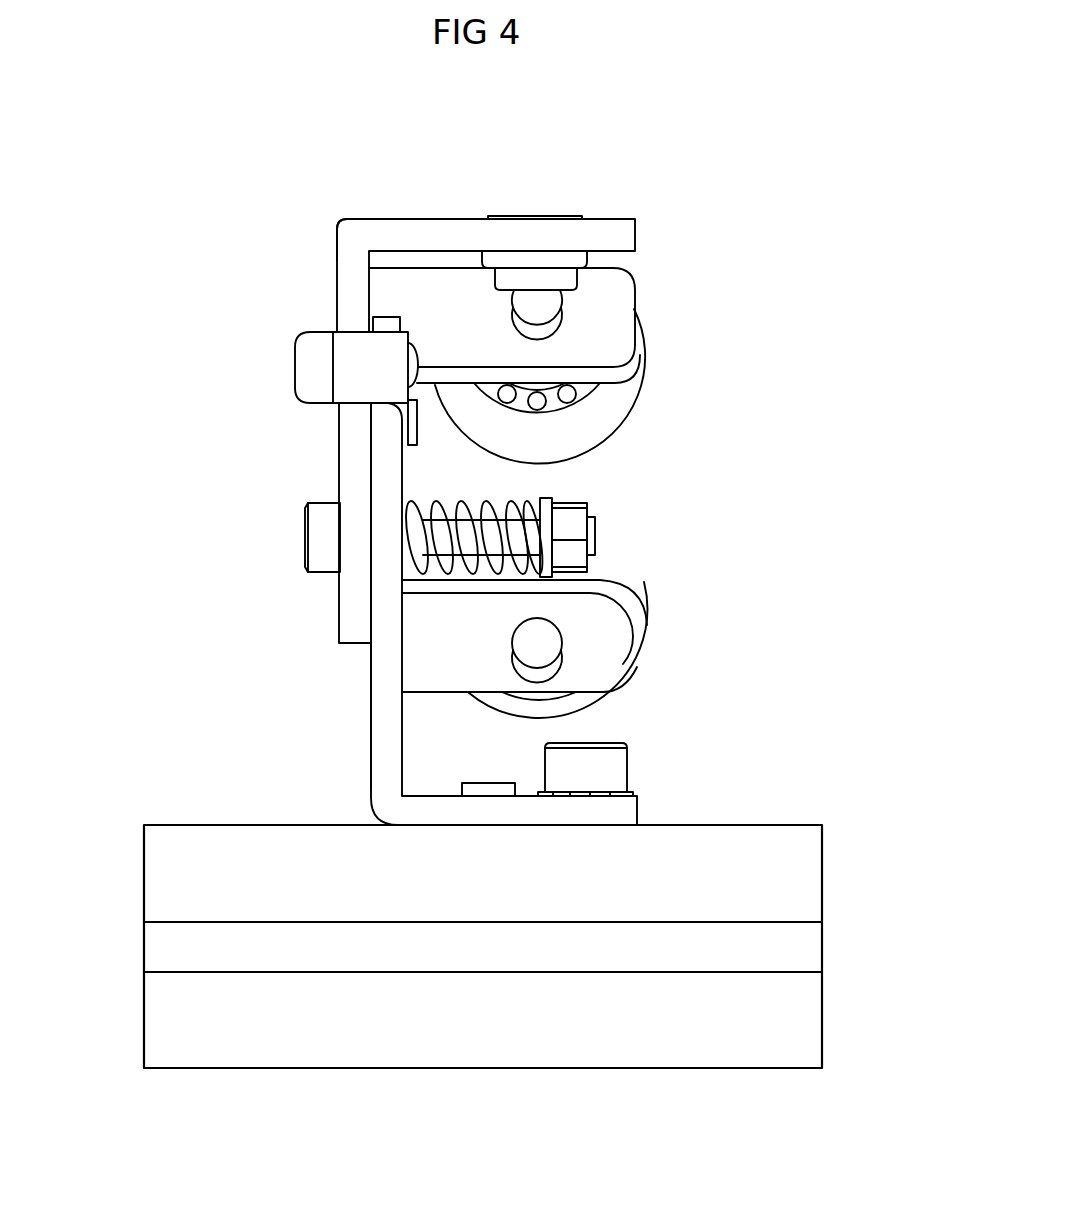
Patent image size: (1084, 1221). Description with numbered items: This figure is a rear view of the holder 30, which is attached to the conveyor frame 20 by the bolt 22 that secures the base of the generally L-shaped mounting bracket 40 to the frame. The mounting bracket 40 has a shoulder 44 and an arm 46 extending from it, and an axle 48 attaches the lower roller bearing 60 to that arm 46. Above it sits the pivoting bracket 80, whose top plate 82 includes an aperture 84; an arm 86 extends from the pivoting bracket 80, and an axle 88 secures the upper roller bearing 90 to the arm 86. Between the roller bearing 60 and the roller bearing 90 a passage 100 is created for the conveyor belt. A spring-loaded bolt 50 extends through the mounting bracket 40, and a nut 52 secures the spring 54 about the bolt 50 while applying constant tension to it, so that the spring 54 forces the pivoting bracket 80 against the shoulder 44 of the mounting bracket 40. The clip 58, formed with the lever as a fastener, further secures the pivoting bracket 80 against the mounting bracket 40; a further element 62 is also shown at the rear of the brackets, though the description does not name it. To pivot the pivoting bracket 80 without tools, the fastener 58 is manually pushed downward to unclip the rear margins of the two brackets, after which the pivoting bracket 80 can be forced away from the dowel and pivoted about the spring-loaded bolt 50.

The conveyor frame 20 is at (822, 1013).
The bolt 22 is at (627, 772).
The holder 30 is at (167, 276).
The mounting bracket 40 is at (371, 770).
The shoulder 44 is at (371, 708).
The arm 46 is at (617, 628).
The axle 48 is at (562, 662).
The bolt 50 is at (593, 540).
The nut 52 is at (582, 503).
The spring 54 is at (480, 513).
The clip 58 is at (350, 372).
The roller bearing 60 is at (577, 710).
The pivot bolt 62 is at (305, 552).
The pivoting bracket 80 is at (337, 283).
The top plate 82 is at (358, 218).
The aperture 84 is at (558, 216).
The arm 86 is at (628, 282).
The axle 88 is at (562, 319).
The roller bearing 90 is at (622, 392).
The passage 100 is at (508, 476).